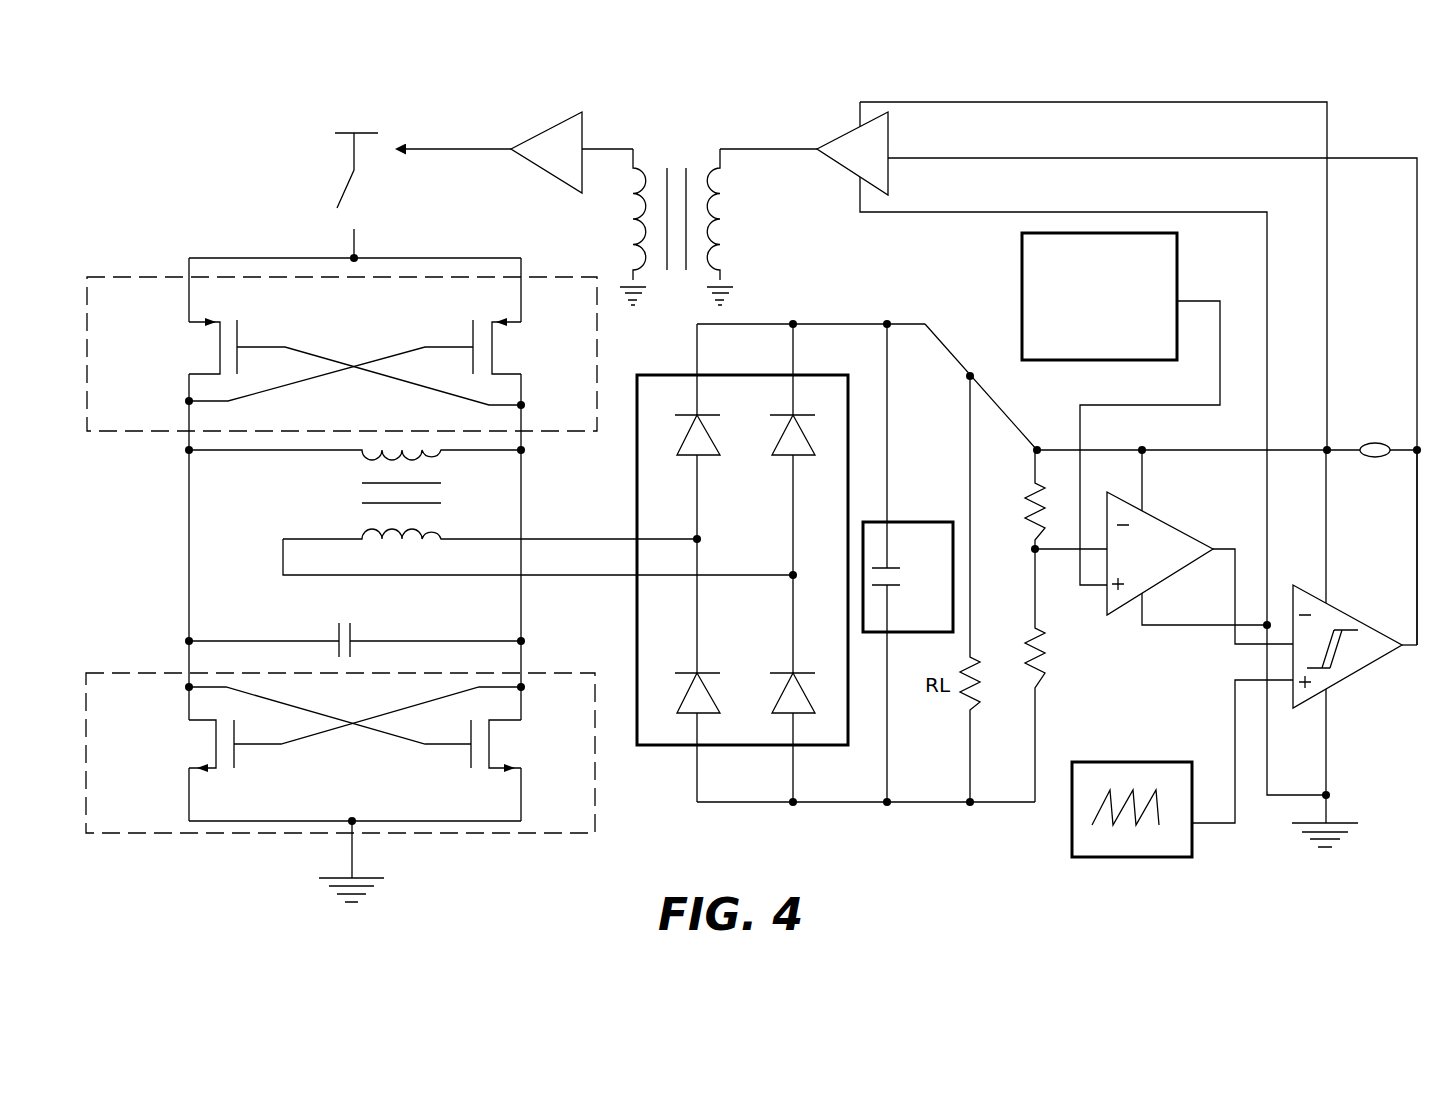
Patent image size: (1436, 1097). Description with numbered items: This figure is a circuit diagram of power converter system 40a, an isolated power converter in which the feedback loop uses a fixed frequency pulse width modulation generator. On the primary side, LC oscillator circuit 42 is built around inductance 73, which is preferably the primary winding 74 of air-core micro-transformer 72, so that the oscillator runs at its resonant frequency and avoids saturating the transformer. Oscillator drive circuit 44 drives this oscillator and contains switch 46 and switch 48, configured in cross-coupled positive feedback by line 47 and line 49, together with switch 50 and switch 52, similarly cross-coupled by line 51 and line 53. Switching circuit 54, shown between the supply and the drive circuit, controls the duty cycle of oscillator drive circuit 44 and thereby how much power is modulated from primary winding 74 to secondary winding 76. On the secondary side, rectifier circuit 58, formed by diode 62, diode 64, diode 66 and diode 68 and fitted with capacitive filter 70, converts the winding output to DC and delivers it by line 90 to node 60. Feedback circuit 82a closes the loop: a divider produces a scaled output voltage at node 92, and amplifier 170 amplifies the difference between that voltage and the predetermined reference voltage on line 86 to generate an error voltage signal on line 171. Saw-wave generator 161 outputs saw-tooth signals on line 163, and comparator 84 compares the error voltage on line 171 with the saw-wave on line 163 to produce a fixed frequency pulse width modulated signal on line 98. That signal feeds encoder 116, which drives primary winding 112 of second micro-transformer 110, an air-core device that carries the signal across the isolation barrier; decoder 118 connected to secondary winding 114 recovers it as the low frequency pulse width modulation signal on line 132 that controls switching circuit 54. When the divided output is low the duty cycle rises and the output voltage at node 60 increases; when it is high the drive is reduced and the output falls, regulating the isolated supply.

The power converter system 40a is at (208, 134).
The LC oscillator circuit 42 is at (147, 541).
The oscillator drive circuit 44 is at (144, 275).
The switch 46 is at (238, 331).
The line 47 is at (306, 381).
The switch 48 is at (473, 332).
The line 49 is at (394, 381).
The switch 50 is at (236, 756).
The line 51 is at (323, 738).
The switch 52 is at (471, 756).
The line 53 is at (392, 738).
The switching circuit 54 is at (328, 184).
The rectifier circuit 58 is at (836, 565).
The node 60 is at (1327, 452).
The diode 62 is at (707, 457).
The diode 64 is at (802, 457).
The diode 66 is at (713, 693).
The diode 68 is at (803, 692).
The capacitive filter 70 is at (922, 520).
The micro-transformer 72 is at (493, 514).
The inductance 73 is at (352, 629).
The primary winding 74 is at (364, 460).
The secondary winding 76 is at (270, 491).
The feedback circuit 82a is at (1396, 132).
The comparator 84 is at (1340, 690).
The line 86 is at (1214, 301).
The line 90 is at (1003, 410).
The node 92 is at (1035, 550).
The line 98 is at (1417, 375).
The second micro-transformer 110 is at (697, 189).
The primary winding 112 is at (722, 214).
The secondary winding 114 is at (635, 223).
The encoder 116 is at (843, 132).
The decoder 118 is at (563, 112).
The line 132 is at (460, 149).
The saw-wave generator 161 is at (1128, 762).
The line 163 is at (1223, 823).
The amplifier 170 is at (1175, 523).
The line 171 is at (1233, 587).